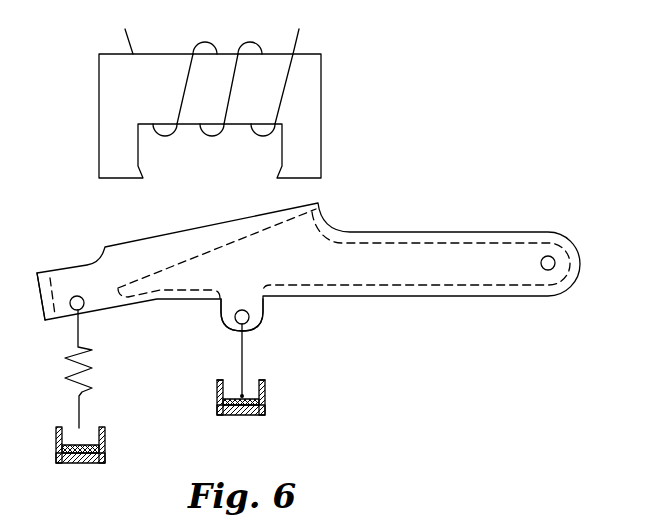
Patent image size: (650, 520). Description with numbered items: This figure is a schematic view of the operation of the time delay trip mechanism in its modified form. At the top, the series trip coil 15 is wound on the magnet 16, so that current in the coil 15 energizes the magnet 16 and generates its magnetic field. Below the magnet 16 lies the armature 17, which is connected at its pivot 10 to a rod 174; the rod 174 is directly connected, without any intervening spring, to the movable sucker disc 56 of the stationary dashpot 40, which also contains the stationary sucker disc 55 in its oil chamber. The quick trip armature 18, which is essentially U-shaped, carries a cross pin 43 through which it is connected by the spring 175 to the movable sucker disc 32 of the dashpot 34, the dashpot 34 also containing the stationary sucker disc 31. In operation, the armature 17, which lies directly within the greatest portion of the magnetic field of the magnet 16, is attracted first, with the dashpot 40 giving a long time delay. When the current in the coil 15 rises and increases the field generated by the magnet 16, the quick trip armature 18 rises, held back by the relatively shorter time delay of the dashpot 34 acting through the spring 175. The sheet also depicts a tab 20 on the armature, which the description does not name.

The pivot 10 is at (555, 262).
The series trip coil 15 is at (300, 35).
The magnet 16 is at (307, 137).
The armature 17 is at (458, 253).
The quick trip armature 18 is at (62, 268).
The tab with hole 20 is at (250, 317).
The stationary sucker disc 31 is at (58, 462).
The movable sucker disc 32 is at (58, 452).
The dashpot 34 is at (83, 454).
The stationary dashpot 40 is at (273, 403).
The cross pin 43 is at (84, 306).
The stationary sucker disc 55 is at (265, 410).
The movable sucker disc 56 is at (265, 402).
The rod 174 is at (245, 357).
The spring 175 is at (90, 373).